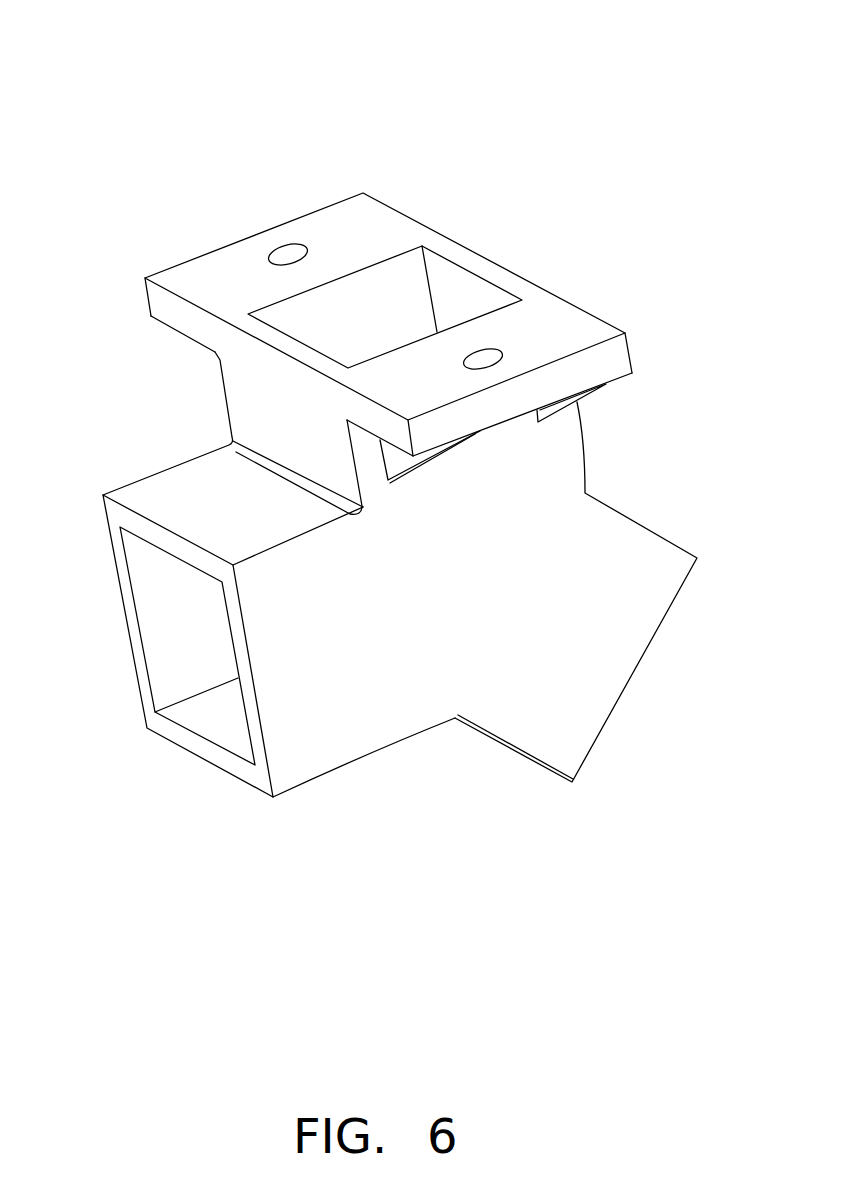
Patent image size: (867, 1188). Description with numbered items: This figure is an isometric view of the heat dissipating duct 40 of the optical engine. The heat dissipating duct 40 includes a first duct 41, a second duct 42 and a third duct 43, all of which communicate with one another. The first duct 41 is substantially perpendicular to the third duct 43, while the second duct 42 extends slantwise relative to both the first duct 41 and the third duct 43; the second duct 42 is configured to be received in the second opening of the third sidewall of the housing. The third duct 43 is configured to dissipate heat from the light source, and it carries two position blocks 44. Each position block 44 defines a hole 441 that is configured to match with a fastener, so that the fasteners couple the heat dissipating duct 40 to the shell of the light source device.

The heat dissipating duct 40 is at (248, 66).
The first duct 41 is at (173, 597).
The second duct 42 is at (623, 690).
The third duct 43 is at (372, 287).
The position block 44 is at (197, 283).
The hole 441 is at (287, 249).